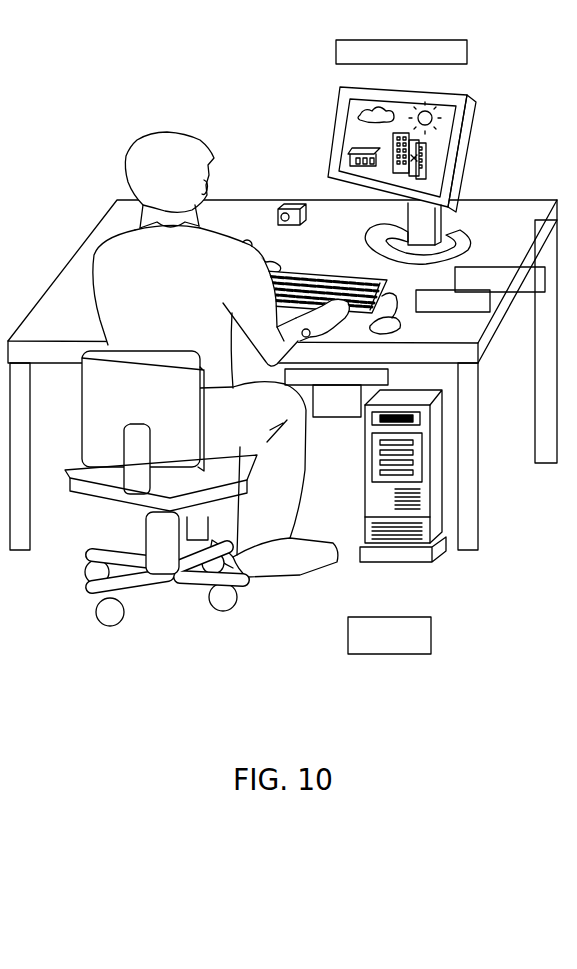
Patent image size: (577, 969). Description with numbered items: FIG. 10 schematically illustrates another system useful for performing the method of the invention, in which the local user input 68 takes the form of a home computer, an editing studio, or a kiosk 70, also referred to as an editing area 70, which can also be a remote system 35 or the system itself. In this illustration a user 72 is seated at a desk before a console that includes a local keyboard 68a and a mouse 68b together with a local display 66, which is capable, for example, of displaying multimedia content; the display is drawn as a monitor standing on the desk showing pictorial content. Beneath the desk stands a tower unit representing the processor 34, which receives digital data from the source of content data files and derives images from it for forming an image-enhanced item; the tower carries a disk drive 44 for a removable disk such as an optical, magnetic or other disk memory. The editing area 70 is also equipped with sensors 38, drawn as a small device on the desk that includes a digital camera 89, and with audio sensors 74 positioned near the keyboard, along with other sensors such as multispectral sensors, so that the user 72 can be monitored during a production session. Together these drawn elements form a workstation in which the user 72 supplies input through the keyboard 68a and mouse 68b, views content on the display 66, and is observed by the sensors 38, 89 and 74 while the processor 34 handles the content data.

The editing area 70 is at (537, 80).
The local user input 68 is at (489, 180).
The local display 66 is at (401, 61).
The user 72 is at (221, 354).
The audio sensors 74 is at (246, 240).
The sensors 38 is at (298, 205).
The digital camera 89 is at (289, 206).
The local keyboard 68a is at (372, 285).
The mouse 68b is at (396, 324).
The processor 34 is at (398, 553).
The disk drive 44 is at (373, 419).
The remote system 35 is at (452, 621).